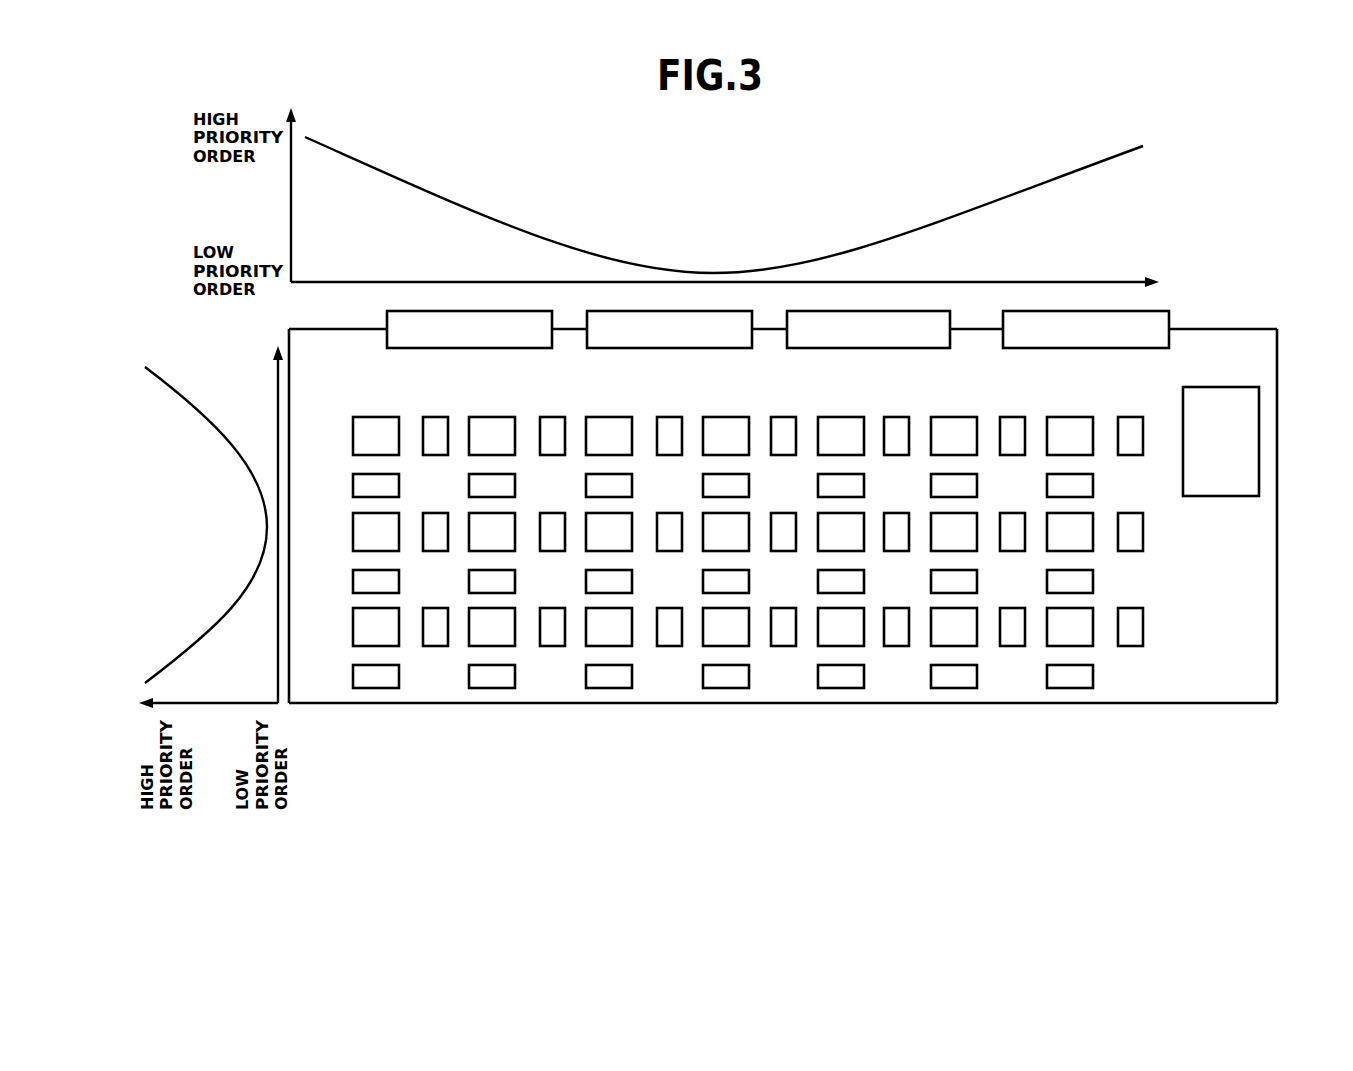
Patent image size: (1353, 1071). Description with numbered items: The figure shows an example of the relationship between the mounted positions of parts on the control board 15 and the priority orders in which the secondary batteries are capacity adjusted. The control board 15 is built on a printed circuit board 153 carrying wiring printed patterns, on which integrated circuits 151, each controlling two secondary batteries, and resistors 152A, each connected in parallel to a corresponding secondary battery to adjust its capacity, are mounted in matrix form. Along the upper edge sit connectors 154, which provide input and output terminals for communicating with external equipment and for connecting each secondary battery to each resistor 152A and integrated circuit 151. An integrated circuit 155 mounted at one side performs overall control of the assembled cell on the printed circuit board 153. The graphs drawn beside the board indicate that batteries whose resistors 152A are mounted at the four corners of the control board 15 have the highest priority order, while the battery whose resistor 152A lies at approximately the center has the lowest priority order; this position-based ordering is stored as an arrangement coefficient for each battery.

The control board 15 is at (812, 537).
The integrated circuit 151 is at (368, 635).
The resistor 152A is at (1130, 642).
The printed circuit board 153 is at (1218, 683).
The connector 154 is at (1157, 322).
The integrated circuit 155 is at (1237, 433).